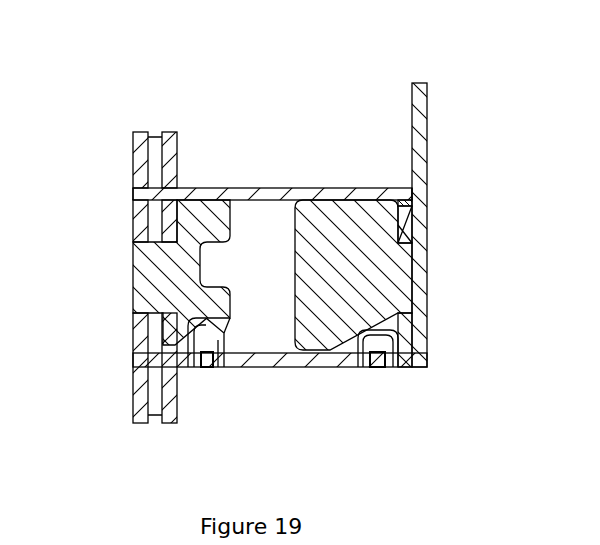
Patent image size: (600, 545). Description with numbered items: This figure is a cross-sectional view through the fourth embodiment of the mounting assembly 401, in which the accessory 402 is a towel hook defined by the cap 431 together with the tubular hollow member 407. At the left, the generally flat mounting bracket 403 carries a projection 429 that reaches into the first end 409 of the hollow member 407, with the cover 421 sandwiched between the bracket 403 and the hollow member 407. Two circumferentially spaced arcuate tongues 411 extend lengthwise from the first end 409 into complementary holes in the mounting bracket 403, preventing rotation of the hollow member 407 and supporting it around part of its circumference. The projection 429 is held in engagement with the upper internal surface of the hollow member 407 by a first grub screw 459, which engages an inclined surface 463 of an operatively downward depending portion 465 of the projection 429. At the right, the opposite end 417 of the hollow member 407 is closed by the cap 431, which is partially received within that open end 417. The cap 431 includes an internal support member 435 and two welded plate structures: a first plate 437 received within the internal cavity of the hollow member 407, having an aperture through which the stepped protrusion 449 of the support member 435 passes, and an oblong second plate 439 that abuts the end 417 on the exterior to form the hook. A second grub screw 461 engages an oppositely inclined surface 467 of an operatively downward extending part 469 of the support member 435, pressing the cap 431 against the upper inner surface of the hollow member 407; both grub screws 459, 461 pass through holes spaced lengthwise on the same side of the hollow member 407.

The mounting assembly 401 is at (110, 58).
The accessory 402 is at (426, 78).
The mounting bracket 403 is at (141, 123).
The hollow member 407 is at (249, 192).
The first end 409 is at (168, 212).
The arcuate tongues 411 is at (132, 195).
The opposite end 417 is at (411, 188).
The cover 421 is at (295, 250).
The projection 429 is at (193, 232).
The cap 431 is at (430, 318).
The internal support member 435 is at (319, 212).
The first plate 437 is at (403, 208).
The second plate 439 is at (409, 232).
The stepped protrusion 449 is at (387, 245).
The first grub screw 459 is at (212, 367).
The second grub screw 461 is at (386, 367).
The inclined surface 463 is at (197, 367).
The downward depending portion 465 is at (223, 331).
The inclined surface 467 is at (355, 367).
The downward extending part 469 is at (306, 318).